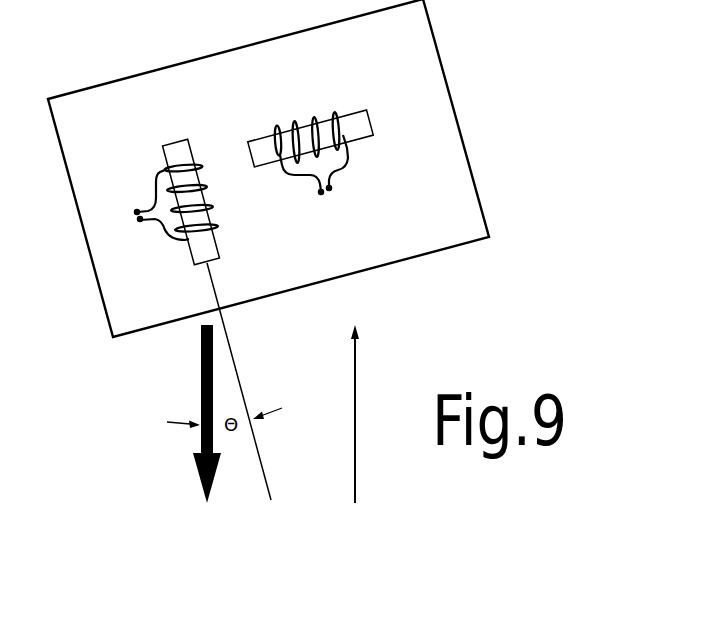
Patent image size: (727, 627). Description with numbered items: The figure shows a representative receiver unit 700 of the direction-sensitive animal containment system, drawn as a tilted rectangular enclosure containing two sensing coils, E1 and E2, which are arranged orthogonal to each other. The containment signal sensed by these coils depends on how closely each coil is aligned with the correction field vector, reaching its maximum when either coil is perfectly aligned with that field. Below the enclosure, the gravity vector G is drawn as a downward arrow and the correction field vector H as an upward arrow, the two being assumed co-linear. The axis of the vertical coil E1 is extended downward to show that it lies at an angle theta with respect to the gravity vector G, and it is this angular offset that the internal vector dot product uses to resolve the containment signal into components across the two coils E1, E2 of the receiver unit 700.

The receiver unit 700 is at (337, 168).
The vertical sensing coil E1 is at (162, 202).
The second sensing coil E2 is at (311, 170).
The gravity vector G is at (215, 522).
The correction field vector H is at (365, 522).